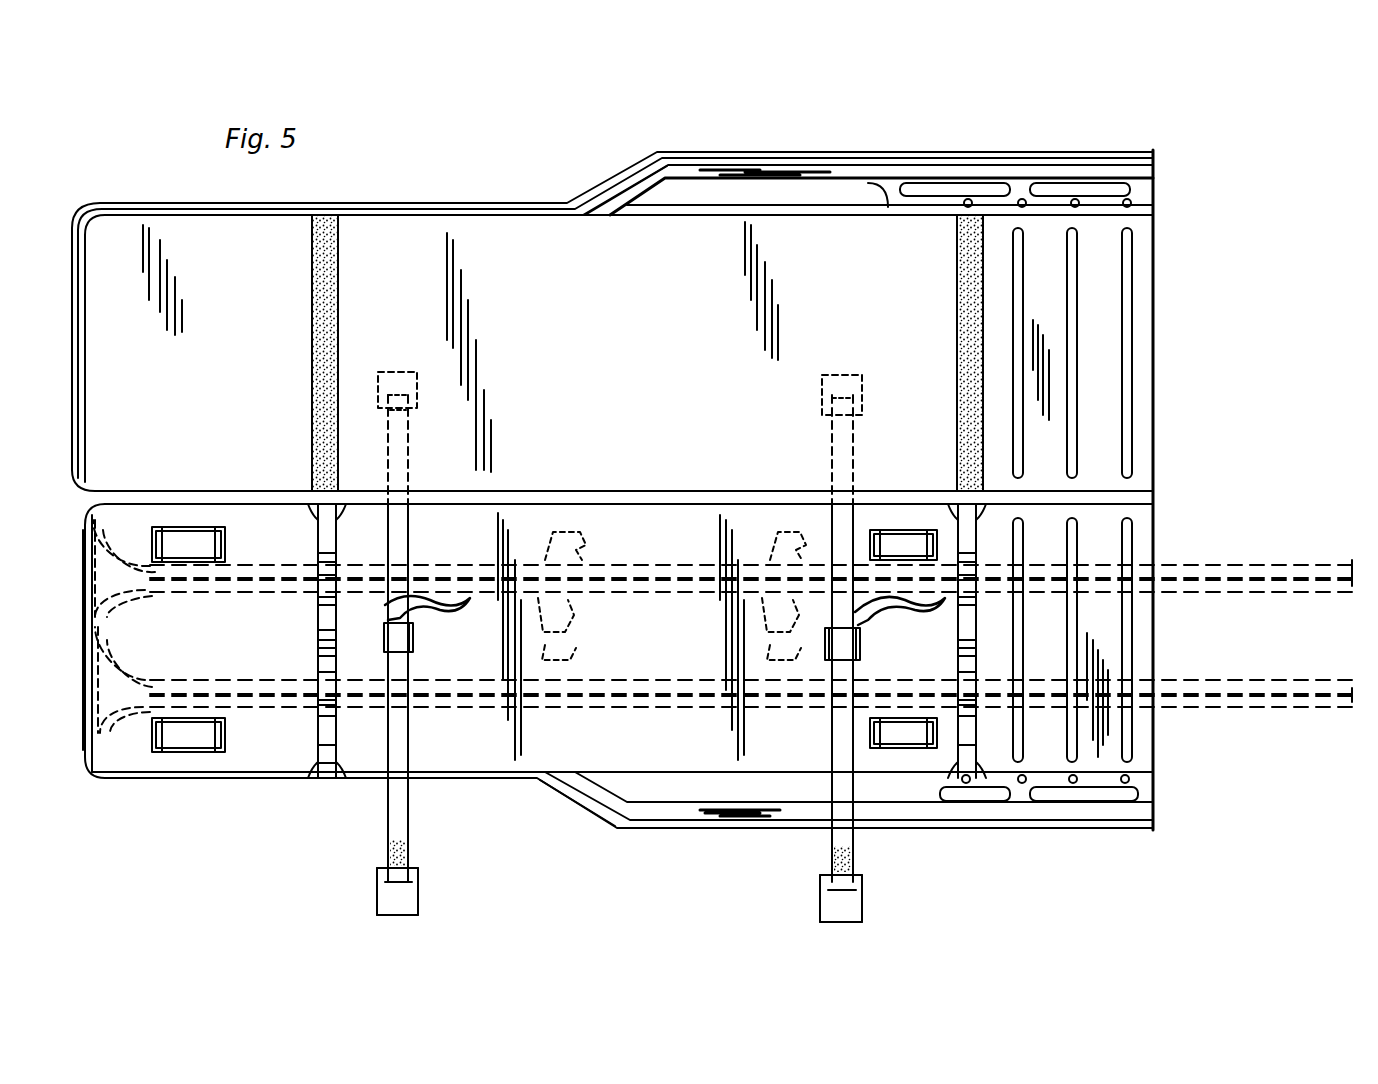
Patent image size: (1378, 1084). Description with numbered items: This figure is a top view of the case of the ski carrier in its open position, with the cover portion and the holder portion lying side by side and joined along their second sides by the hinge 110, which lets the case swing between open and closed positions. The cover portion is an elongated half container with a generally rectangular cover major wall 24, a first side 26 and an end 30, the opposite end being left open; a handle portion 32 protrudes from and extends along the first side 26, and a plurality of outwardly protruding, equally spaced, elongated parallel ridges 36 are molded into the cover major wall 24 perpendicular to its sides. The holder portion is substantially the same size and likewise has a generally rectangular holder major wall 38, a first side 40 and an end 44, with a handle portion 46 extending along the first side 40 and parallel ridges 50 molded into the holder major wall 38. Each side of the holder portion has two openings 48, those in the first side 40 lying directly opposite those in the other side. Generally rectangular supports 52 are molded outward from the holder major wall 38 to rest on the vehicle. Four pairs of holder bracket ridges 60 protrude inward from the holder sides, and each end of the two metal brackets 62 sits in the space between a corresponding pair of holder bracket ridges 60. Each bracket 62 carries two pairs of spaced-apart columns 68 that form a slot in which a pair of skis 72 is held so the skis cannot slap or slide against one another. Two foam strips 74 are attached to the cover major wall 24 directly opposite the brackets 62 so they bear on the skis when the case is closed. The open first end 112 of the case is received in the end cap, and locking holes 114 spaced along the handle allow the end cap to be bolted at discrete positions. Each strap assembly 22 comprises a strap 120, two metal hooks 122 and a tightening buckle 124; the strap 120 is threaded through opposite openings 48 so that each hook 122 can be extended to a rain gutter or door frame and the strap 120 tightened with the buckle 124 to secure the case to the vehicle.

The strap assembly 22 is at (366, 913).
The cover major wall 24 is at (385, 268).
The first side 26 is at (625, 217).
The end 30 is at (72, 325).
The handle portion 32 is at (735, 172).
The ridges 36 is at (478, 203).
The holder major wall 38 is at (482, 755).
The first side 40 is at (580, 808).
The end 44 is at (82, 668).
The handle portion 46 is at (722, 812).
The openings 48 is at (412, 495).
The ridges 50 is at (1127, 600).
The supports 52 is at (190, 545).
The holder bracket ridges 60 is at (318, 525).
The brackets 62 is at (318, 648).
The columns 68 is at (310, 575).
The skis 72 is at (1222, 608).
The foam strips 74 is at (320, 262).
The hinge 110 is at (1125, 495).
The first end 112 is at (1086, 142).
The locking holes 114 is at (1130, 207).
The strap 120 is at (405, 430).
The hooks 122 is at (398, 372).
The tightening buckle 124 is at (413, 638).